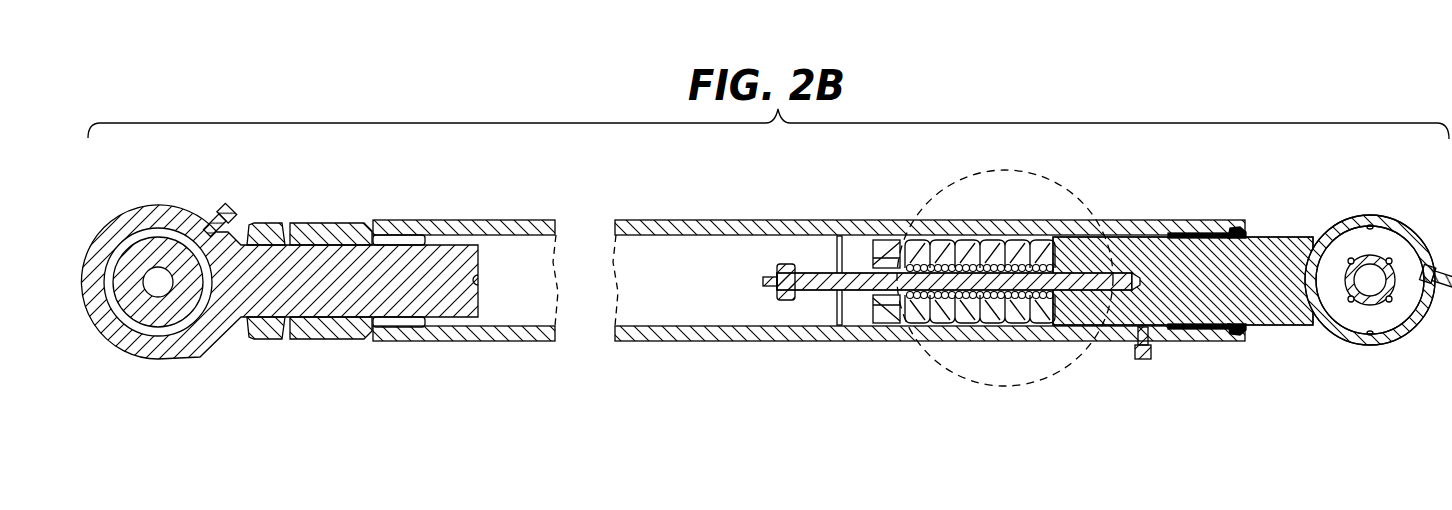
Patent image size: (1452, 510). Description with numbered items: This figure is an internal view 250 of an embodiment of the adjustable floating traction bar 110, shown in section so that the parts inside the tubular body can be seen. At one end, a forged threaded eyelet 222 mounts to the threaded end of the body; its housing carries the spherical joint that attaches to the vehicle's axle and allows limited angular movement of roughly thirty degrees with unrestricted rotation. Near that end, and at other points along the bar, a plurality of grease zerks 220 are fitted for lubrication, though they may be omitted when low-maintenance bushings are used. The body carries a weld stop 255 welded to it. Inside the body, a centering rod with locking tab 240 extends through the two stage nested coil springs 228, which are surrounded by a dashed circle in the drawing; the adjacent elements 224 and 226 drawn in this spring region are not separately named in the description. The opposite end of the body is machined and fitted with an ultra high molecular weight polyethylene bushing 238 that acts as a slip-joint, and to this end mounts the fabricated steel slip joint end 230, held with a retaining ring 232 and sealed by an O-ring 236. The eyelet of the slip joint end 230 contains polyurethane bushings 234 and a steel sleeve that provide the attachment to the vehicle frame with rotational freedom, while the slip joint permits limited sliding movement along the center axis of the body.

The internal view 250 is at (186, 182).
The grease zerks 220 is at (225, 210).
The forged threaded eyelet 222 is at (265, 255).
The adjustable floating traction bar 110 is at (437, 332).
The centering rod with locking tab 240 is at (822, 272).
The weld stop 255 is at (852, 338).
The spring seat 224 is at (937, 265).
The spring 226 is at (975, 240).
The two stage nested coil springs 228 is at (1062, 180).
The fabricated steel slip joint end 230 is at (1163, 237).
The retaining ring 232 is at (1253, 231).
The poly bushing 234 is at (1393, 247).
The O-ring 236 is at (1242, 328).
The UHMW polyethylene bushing 238 is at (1192, 329).